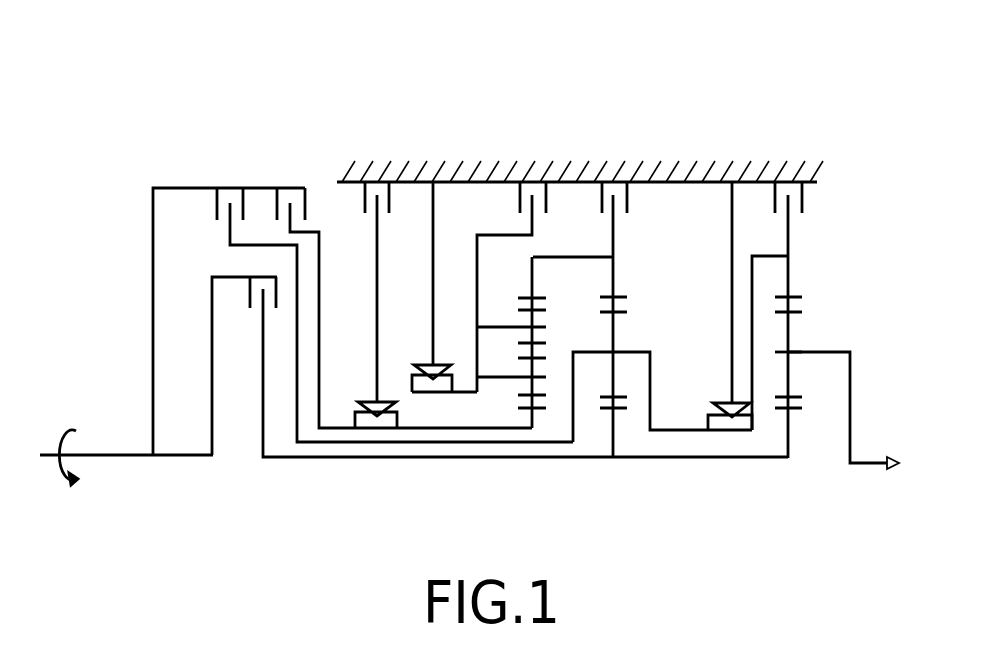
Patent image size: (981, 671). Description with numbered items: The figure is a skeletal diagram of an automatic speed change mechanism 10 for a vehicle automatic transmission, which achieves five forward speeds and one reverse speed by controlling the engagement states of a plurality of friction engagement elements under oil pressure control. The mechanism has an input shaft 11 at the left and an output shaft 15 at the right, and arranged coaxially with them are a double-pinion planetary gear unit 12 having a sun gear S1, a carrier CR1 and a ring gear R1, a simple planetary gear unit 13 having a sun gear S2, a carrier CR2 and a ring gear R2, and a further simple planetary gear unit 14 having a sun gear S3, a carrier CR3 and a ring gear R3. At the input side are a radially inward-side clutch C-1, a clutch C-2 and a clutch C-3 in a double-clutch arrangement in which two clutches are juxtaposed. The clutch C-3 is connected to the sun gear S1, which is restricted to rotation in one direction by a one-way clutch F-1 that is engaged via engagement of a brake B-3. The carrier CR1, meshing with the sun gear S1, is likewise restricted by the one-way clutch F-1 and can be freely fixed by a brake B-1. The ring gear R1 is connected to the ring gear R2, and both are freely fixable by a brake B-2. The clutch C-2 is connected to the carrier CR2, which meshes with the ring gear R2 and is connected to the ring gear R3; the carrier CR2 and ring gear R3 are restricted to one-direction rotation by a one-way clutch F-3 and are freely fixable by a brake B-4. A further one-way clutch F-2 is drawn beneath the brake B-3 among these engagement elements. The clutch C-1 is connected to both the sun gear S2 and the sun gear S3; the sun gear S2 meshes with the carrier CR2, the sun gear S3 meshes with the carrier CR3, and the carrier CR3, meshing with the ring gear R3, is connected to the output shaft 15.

The automatic speed change mechanism 10 is at (277, 86).
The input shaft 11 is at (120, 455).
The double-pinion planetary gear unit 12 is at (523, 305).
The simple planetary gear unit 13 is at (662, 326).
The simple planetary gear unit 14 is at (819, 326).
The output shaft 15 is at (862, 463).
The clutch C-1 is at (500, 353).
The clutch C-2 is at (390, 302).
The clutch C-3 is at (401, 295).
The brake B-1 is at (511, 262).
The brake B-2 is at (611, 295).
The brake B-3 is at (373, 267).
The brake B-4 is at (788, 295).
The one-way clutch F-1 is at (443, 393).
The one-way clutch F-2 is at (361, 397).
The one-way clutch F-3 is at (730, 321).
The ring gear R1 is at (541, 293).
The ring gear R2 is at (620, 296).
The ring gear R3 is at (797, 298).
The sun gear S1 is at (526, 414).
The sun gear S2 is at (618, 412).
The sun gear S3 is at (795, 412).
The carrier CR1 is at (474, 345).
The carrier CR2 is at (633, 352).
The carrier CR3 is at (819, 352).